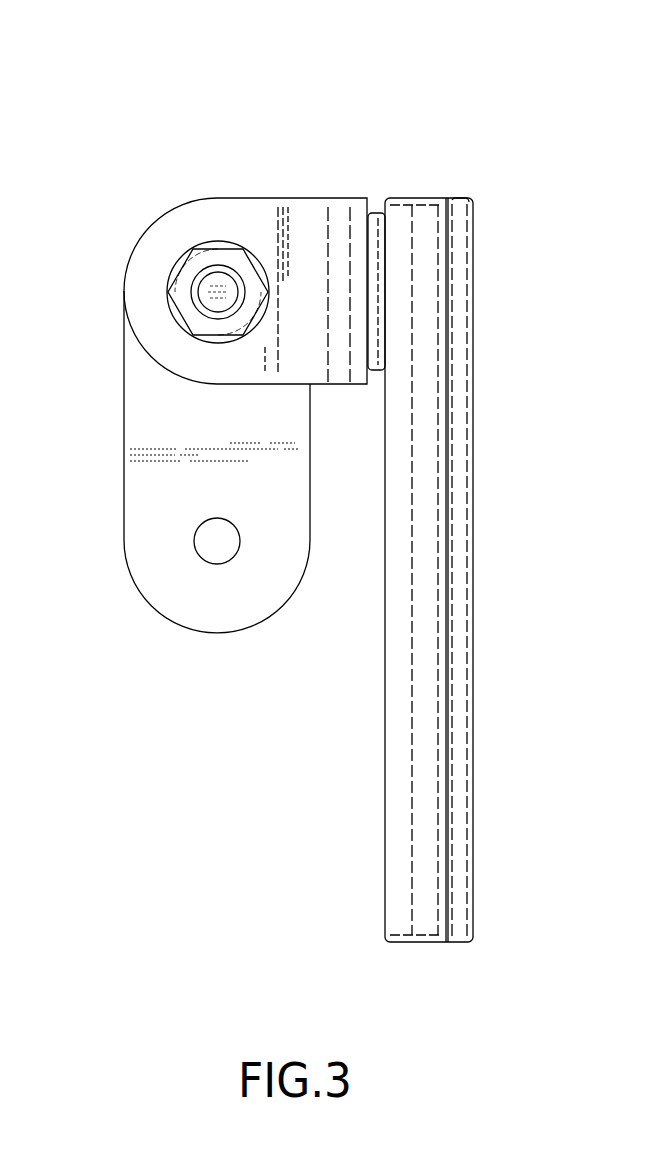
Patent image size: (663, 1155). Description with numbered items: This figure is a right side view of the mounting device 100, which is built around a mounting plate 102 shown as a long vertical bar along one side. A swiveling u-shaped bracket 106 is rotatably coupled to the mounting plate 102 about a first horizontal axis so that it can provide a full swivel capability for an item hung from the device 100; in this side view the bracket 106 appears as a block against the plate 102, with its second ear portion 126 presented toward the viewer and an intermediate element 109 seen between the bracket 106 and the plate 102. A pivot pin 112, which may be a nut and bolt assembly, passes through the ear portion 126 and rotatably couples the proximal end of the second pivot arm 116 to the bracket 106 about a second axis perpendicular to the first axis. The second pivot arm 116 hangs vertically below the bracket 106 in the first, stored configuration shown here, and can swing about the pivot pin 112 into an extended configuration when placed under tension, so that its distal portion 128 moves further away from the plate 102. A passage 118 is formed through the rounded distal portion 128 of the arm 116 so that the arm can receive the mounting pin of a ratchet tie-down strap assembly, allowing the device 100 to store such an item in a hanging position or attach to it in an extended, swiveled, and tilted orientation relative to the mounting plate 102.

The mounting device 100 is at (97, 84).
The mounting plate 102 is at (460, 380).
The swiveling u-shaped bracket 106 is at (243, 220).
The spacer 109 is at (377, 213).
The pivot pin 112 is at (203, 291).
The second pivot arm 116 is at (145, 413).
The passage 118 is at (193, 551).
The second ear portion 126 is at (315, 220).
The distal portion 128 is at (221, 633).